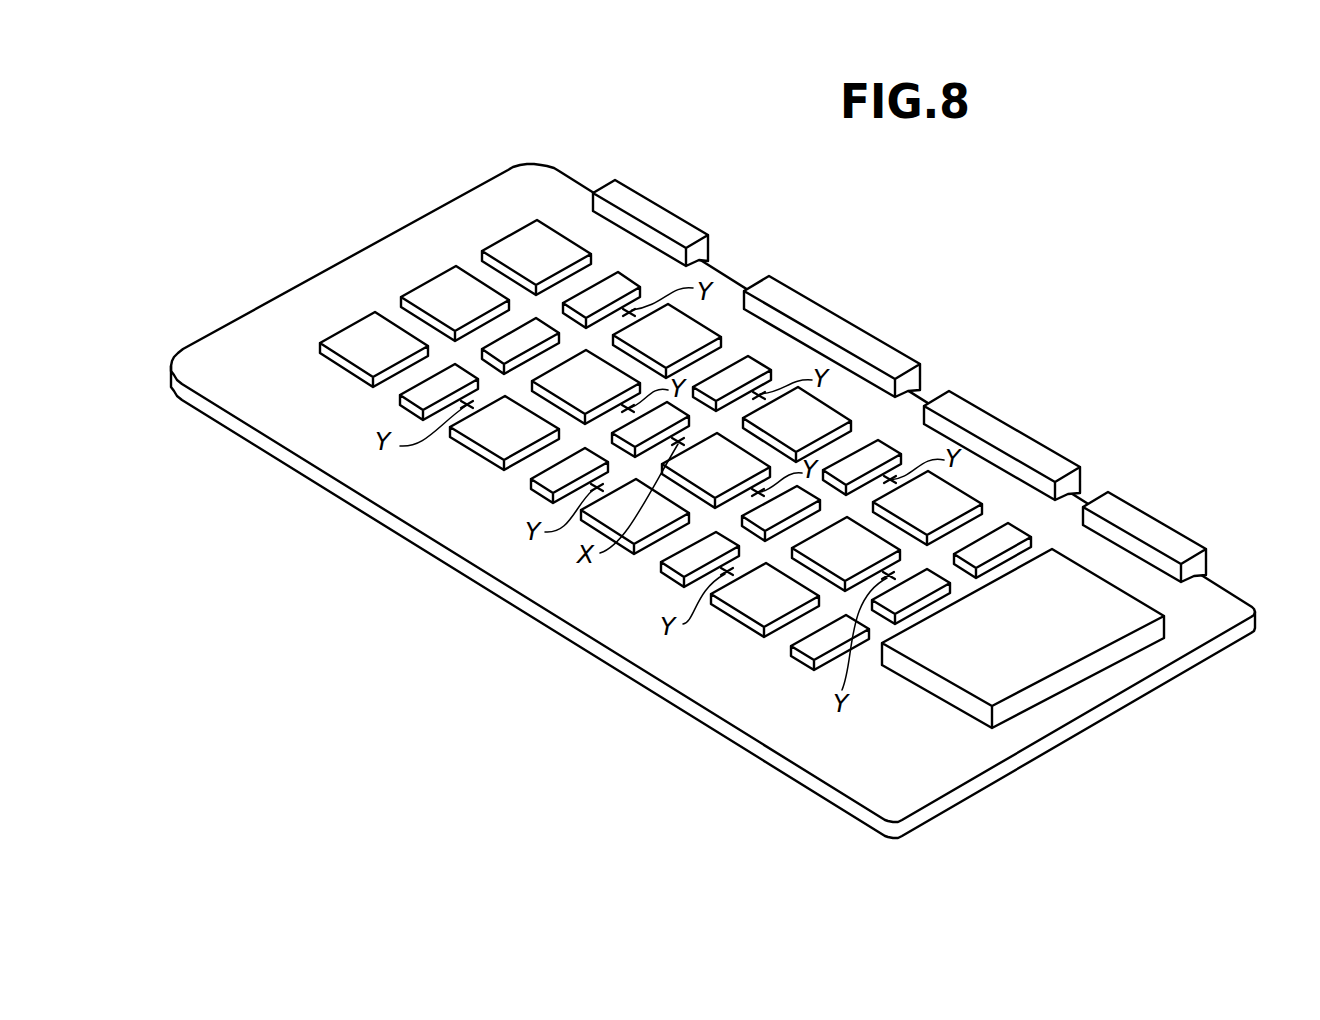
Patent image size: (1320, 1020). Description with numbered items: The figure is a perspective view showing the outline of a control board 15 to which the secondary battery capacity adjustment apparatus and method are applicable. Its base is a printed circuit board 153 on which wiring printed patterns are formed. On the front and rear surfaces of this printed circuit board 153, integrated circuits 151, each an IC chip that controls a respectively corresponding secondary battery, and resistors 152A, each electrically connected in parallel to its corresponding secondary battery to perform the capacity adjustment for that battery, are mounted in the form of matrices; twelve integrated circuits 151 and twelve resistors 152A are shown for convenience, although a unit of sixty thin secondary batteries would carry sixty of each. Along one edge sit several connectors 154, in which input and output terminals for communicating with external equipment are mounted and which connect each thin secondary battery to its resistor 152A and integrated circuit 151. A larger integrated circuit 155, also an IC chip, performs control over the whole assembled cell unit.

The control board 15 is at (1068, 318).
The integrated circuit 151 is at (518, 242).
The resistor 152A is at (453, 377).
The printed circuit board 153 is at (247, 350).
The connector 154 is at (680, 217).
The integrated circuit 155 is at (1060, 625).